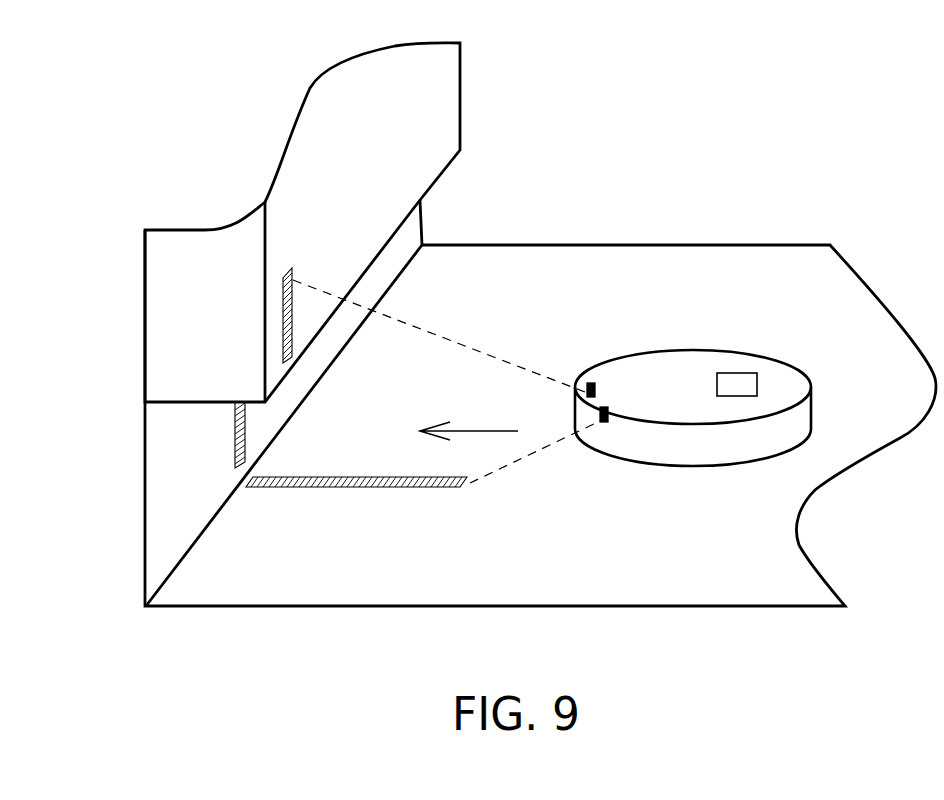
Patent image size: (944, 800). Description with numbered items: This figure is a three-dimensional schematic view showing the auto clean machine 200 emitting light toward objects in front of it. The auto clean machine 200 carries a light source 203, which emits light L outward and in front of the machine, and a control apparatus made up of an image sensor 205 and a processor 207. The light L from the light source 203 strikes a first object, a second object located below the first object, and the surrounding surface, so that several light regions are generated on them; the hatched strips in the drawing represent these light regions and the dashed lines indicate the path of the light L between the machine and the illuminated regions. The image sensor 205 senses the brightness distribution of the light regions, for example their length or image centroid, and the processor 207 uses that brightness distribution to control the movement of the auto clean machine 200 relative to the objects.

The auto clean machine 200 is at (673, 385).
The light source 203 is at (604, 406).
The image sensor 205 is at (591, 382).
The processor 207 is at (733, 398).
The light L is at (469, 416).